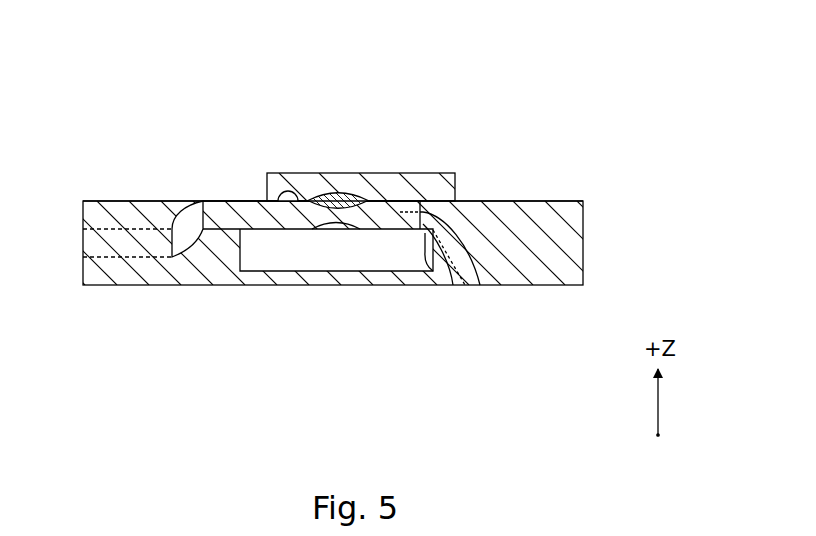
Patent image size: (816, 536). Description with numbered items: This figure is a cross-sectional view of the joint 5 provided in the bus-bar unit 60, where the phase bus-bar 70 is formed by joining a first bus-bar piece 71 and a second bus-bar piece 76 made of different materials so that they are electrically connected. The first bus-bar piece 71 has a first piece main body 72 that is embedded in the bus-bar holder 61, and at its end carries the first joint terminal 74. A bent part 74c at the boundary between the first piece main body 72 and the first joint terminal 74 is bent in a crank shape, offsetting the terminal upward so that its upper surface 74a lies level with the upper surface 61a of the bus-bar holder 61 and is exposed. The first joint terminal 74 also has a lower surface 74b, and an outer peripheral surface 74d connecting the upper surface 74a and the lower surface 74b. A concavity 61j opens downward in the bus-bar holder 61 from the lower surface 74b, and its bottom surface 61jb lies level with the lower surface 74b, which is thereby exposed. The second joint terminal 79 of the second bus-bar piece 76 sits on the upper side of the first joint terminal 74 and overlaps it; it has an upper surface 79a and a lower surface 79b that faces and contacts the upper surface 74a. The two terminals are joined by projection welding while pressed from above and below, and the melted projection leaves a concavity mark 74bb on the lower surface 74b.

The joint 5 is at (340, 192).
The lens unit 60 is at (339, 210).
The bus-bar holder 61 is at (588, 227).
The upper surface of the bus-bar holder 61a is at (548, 201).
The concavity 61j is at (447, 284).
The bottom surface of the concavity 61jb is at (426, 266).
The phase bus-bar 70 is at (210, 117).
The first bus-bar piece 71 is at (202, 198).
The first piece main body 72 is at (113, 257).
The first joint terminal 74 is at (381, 298).
The upper surface of the first joint terminal 74a is at (300, 201).
The lower surface of the first joint terminal 74b is at (288, 201).
The concavity mark 74bb is at (340, 228).
The bent part 74c is at (196, 233).
The outer peripheral surface 74d is at (467, 287).
The second bus-bar piece 76 is at (236, 117).
The second joint terminal 79 is at (458, 173).
The upper surface of the second joint terminal 79a is at (377, 173).
The lower surface of the second joint terminal 79b is at (400, 198).